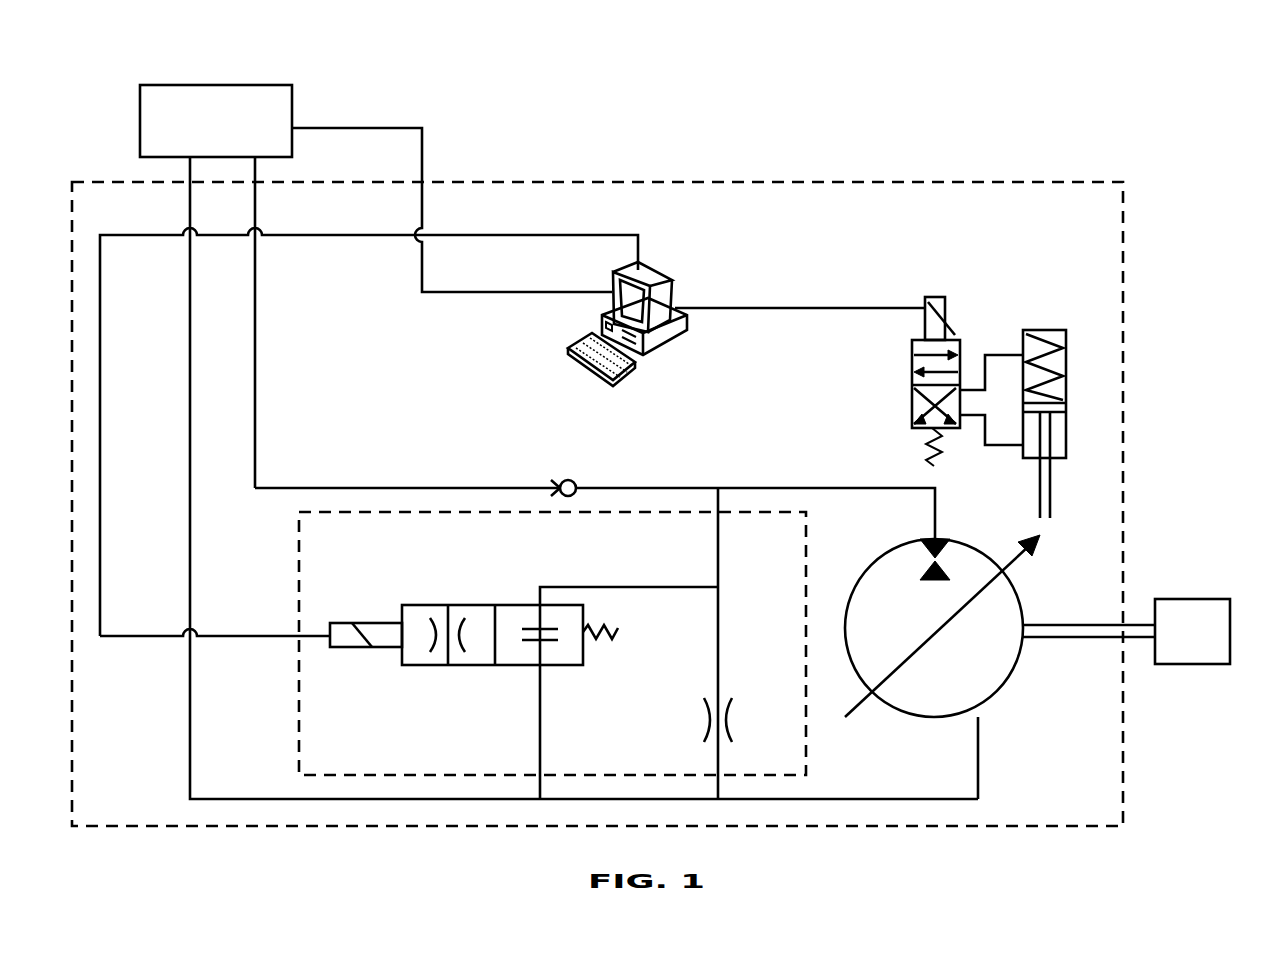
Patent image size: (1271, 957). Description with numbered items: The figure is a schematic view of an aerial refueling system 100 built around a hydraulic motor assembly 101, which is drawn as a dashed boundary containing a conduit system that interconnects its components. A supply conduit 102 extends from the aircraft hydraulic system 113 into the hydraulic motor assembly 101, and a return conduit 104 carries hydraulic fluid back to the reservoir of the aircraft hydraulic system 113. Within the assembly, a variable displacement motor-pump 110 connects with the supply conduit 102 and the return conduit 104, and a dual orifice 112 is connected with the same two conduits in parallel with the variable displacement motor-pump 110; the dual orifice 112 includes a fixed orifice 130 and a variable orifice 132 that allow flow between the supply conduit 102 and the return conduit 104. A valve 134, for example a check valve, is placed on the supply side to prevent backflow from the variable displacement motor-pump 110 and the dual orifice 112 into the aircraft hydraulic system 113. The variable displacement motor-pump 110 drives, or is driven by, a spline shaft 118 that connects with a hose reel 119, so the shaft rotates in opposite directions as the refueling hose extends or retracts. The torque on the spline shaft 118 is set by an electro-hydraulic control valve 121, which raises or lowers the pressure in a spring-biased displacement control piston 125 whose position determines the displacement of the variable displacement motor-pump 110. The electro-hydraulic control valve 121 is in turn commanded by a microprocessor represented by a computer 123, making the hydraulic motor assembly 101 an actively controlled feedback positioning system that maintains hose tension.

The aerial refueling system 100 is at (902, 97).
The hydraulic motor assembly 101 is at (1057, 182).
The supply conduit 102 is at (362, 488).
The return conduit 104 is at (280, 800).
The variable displacement motor-pump 110 is at (1005, 680).
The dual orifice 112 is at (418, 775).
The aircraft hydraulic system 113 is at (273, 85).
The spline shaft 118 is at (1072, 622).
The hose reel 119 is at (1190, 664).
The electro-hydraulic control valve 121 is at (945, 308).
The computer 123 is at (670, 281).
The spring-biased displacement control piston 125 is at (1066, 420).
The fixed orifice 130 is at (735, 722).
The variable orifice 132 is at (562, 665).
The valve 134 is at (560, 480).